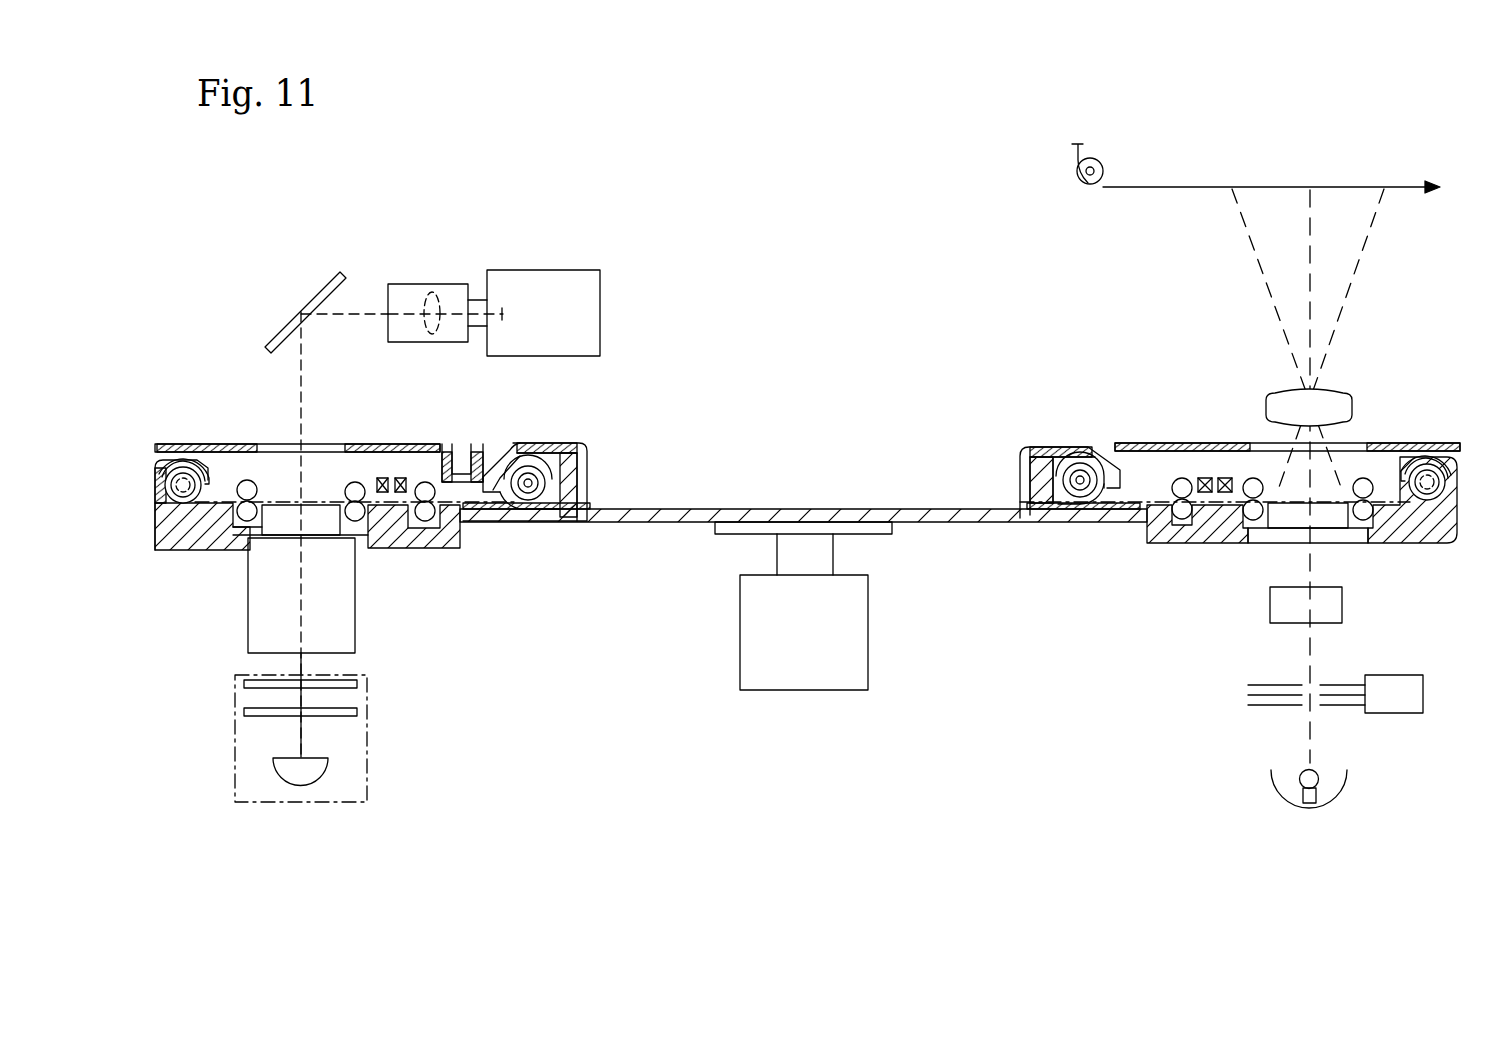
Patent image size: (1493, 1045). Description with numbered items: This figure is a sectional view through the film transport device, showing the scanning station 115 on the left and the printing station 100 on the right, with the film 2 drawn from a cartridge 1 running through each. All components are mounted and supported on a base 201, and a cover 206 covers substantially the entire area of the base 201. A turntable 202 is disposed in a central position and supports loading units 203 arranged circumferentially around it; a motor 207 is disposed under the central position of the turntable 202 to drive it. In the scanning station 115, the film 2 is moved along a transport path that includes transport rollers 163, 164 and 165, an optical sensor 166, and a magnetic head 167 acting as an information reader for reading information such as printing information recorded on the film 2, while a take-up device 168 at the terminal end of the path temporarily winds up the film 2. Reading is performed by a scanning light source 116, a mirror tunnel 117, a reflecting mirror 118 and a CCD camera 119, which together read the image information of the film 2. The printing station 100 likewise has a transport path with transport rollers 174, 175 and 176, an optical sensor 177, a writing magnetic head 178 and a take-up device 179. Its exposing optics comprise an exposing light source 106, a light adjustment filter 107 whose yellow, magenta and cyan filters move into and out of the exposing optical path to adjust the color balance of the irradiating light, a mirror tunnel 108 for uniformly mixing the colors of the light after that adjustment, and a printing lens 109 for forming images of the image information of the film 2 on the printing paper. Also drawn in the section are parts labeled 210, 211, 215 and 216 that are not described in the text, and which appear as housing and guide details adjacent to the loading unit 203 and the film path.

The cartridge 1 is at (572, 522).
The film 2 is at (291, 498).
The printing station 100 is at (1396, 362).
The exposing light source 106 is at (1347, 782).
The light adjustment filter 107 is at (1400, 676).
The mirror tunnel 108 is at (1336, 600).
The printing lens 109 is at (1338, 402).
The scanning station 115 is at (217, 332).
The scanning light source 116 is at (372, 758).
The mirror tunnel 117 is at (348, 636).
The reflecting mirror 118 is at (322, 268).
The CCD camera 119 is at (580, 270).
The transport roller 163 is at (440, 532).
The transport roller 164 is at (362, 522).
The transport roller 165 is at (242, 520).
The optical sensor 166 is at (404, 476).
The magnetic head 167 is at (378, 476).
The take-up device 168 is at (190, 458).
The transport roller 174 is at (1181, 522).
The transport roller 175 is at (1252, 525).
The transport roller 176 is at (1372, 522).
The optical sensor 177 is at (1200, 476).
The writing magnetic head 178 is at (1226, 476).
The take-up device 179 is at (1430, 458).
The base 201 is at (172, 553).
The turntable 202 is at (742, 508).
The loading unit 203 is at (572, 441).
The cover 206 is at (232, 444).
The motor 207 is at (862, 652).
The housing 210 is at (590, 449).
The roller 211 is at (524, 447).
The guide channel 215 is at (455, 436).
The bracket 216 is at (506, 440).